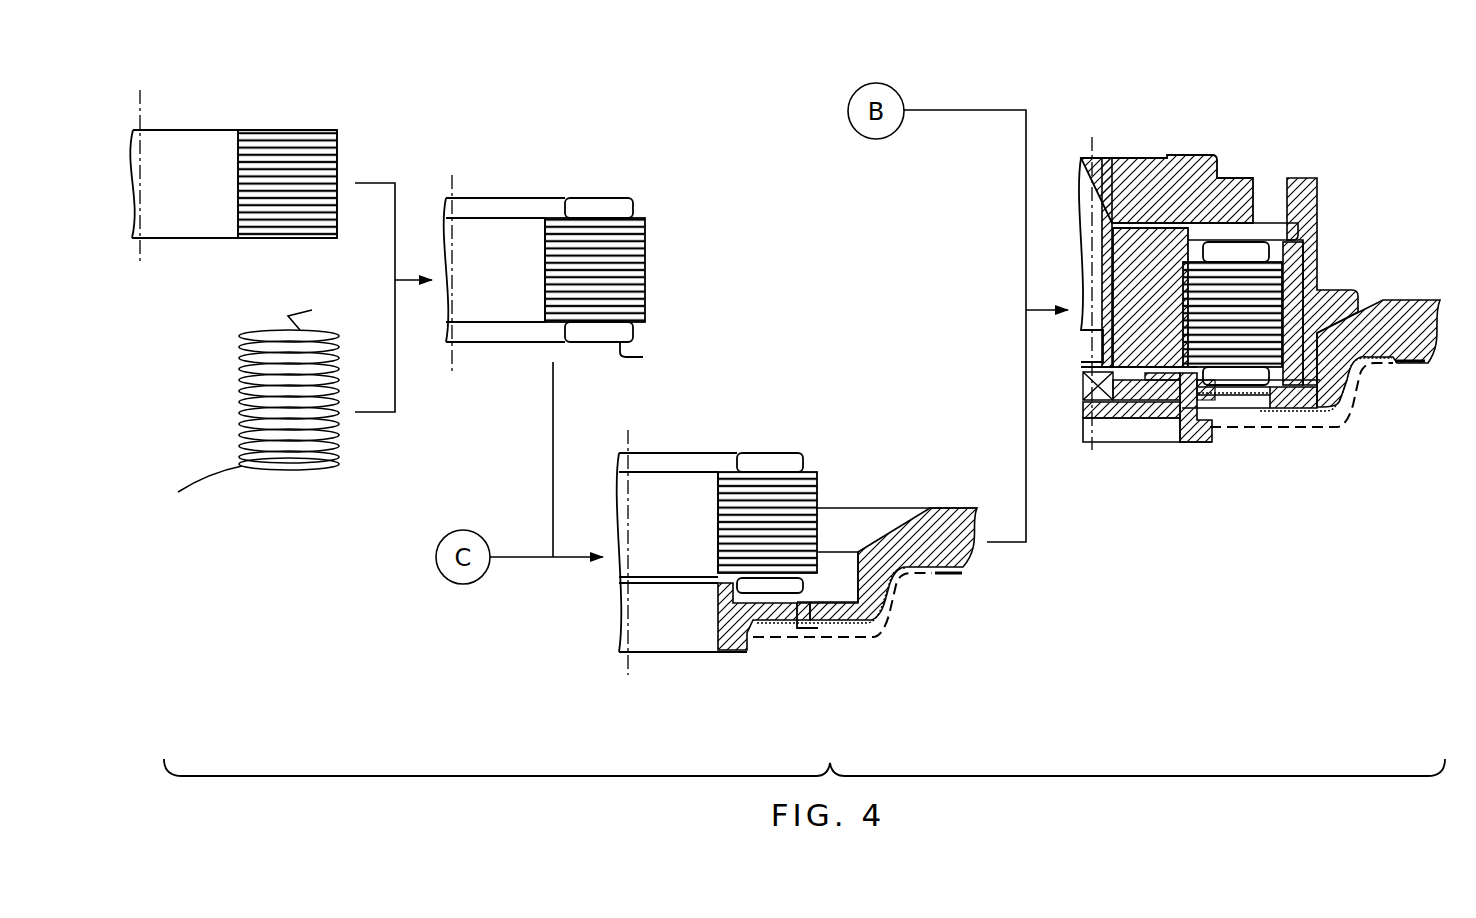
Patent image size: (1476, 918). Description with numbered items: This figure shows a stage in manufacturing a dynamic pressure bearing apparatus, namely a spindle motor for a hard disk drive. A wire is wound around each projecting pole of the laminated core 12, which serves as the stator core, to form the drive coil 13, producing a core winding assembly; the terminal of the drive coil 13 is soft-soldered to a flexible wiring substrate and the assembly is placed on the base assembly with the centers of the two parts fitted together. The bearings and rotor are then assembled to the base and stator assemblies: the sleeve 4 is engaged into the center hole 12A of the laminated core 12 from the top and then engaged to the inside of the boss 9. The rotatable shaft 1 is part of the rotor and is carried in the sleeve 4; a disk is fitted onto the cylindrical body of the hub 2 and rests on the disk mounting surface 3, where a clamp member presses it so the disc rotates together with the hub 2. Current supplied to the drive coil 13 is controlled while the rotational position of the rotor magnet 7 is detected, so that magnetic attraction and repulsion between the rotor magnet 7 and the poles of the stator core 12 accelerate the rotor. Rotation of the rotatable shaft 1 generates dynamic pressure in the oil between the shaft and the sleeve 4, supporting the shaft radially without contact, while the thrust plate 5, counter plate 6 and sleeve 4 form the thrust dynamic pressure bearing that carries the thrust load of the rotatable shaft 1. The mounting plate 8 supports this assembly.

The rotatable shaft 1 is at (1082, 172).
The hub 2 is at (1190, 163).
The disk mounting surface 3 is at (1347, 298).
The sleeve 4 is at (1148, 250).
The thrust plate 5 is at (1127, 396).
The counter plate 6 is at (1108, 413).
The rotor magnet 7 is at (1292, 367).
The mounting plate 8 is at (940, 508).
The boss 9 is at (733, 652).
The laminated core 12 is at (338, 157).
The center hole 12A is at (545, 248).
The drive coil 13 is at (325, 470).